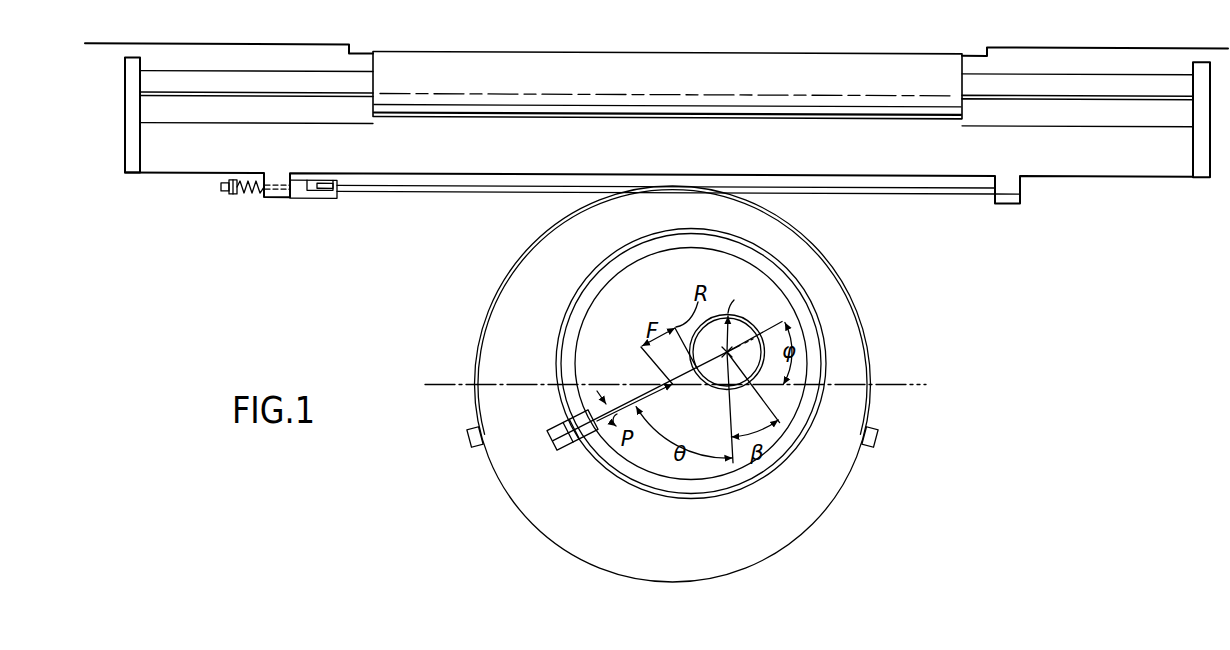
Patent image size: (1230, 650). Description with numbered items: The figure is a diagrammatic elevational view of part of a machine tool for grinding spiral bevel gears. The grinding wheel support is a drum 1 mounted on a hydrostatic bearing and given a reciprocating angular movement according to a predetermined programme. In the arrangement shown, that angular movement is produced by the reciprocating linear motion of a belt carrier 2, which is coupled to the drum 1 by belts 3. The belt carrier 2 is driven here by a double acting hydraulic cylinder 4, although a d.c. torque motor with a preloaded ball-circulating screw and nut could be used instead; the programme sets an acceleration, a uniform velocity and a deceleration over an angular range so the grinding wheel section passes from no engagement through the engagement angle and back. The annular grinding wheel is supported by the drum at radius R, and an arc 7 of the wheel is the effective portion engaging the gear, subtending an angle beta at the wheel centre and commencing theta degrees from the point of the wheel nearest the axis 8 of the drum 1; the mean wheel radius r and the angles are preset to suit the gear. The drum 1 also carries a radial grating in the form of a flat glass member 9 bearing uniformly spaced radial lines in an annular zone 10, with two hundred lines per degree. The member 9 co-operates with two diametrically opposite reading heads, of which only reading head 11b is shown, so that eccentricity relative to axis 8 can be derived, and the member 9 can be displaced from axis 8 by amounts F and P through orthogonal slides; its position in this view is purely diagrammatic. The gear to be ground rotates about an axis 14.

The drum 1 is at (585, 540).
The belt carrier 2 is at (192, 165).
The belts 3 is at (370, 190).
The double acting hydraulic cylinder 4 is at (485, 89).
The arc 7 is at (738, 391).
The axis 8 is at (667, 390).
The flat glass member 9 is at (587, 334).
The annular zone 10 is at (563, 362).
The reading head 11b is at (553, 441).
The axis 14 is at (908, 384).